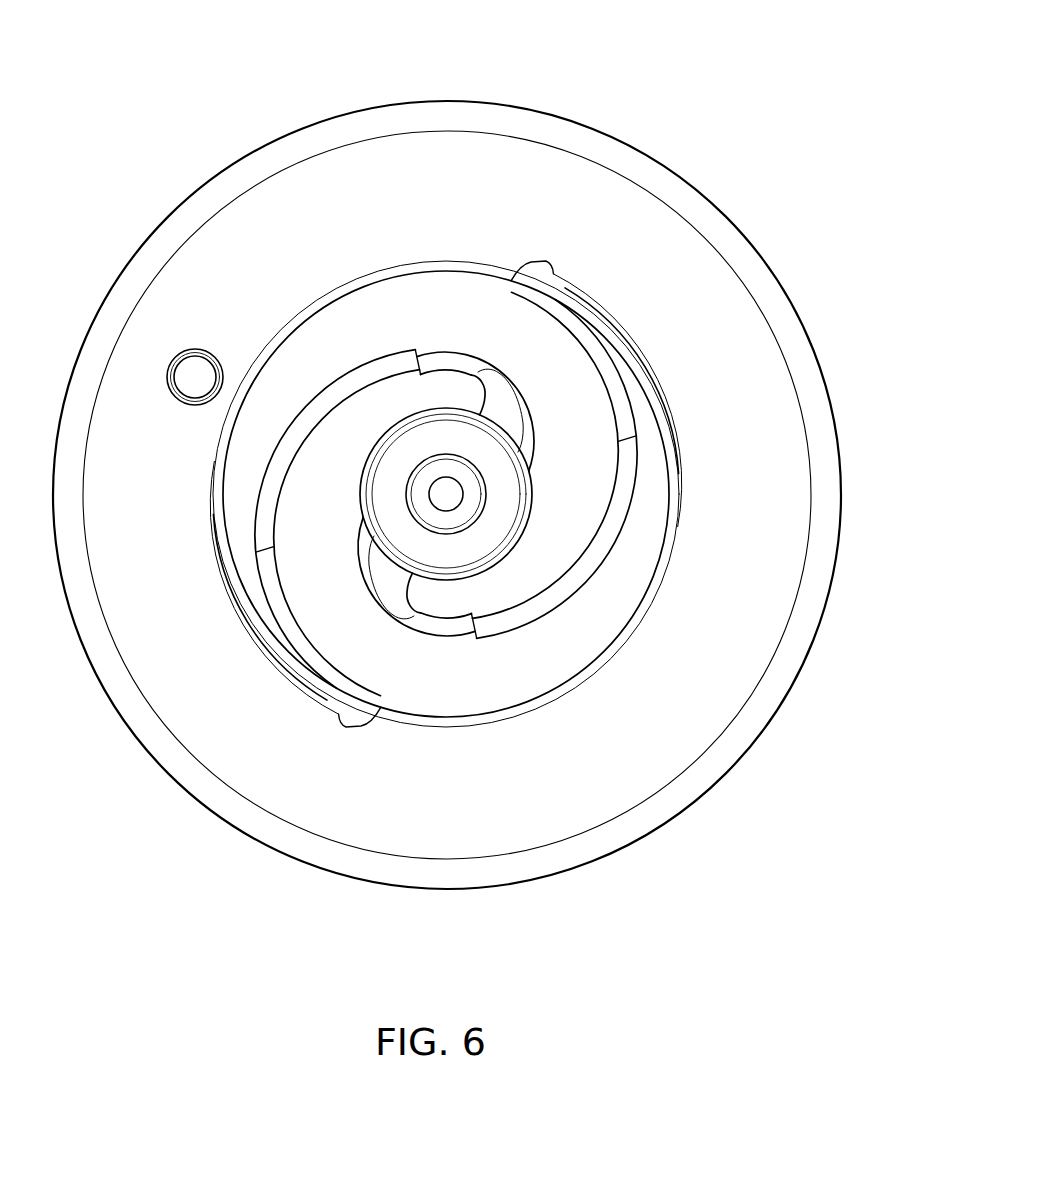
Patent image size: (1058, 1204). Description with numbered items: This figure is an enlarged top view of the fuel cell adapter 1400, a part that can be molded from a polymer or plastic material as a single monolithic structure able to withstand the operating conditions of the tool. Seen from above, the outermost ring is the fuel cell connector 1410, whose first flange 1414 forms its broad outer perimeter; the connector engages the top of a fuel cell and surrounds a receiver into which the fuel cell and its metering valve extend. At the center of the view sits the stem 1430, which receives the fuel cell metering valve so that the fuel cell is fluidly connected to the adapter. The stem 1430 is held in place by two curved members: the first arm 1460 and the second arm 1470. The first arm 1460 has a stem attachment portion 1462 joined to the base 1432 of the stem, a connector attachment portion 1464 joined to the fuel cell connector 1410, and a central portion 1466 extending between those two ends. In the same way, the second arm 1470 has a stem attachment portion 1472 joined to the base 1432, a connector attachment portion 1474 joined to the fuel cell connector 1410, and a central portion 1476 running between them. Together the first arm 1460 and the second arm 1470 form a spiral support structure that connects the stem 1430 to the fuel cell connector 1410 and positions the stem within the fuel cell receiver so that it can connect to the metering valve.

The fuel cell adapter 1400 is at (157, 65).
The fuel cell connector 1410 is at (140, 859).
The first flange 1414 is at (820, 497).
The stem 1430 is at (402, 452).
The base 1432 is at (360, 478).
The first arm 1460 is at (452, 352).
The stem attachment portion 1462 is at (638, 365).
The connector attachment portion 1464 is at (437, 715).
The central portion 1466 is at (290, 443).
The second arm 1470 is at (548, 611).
The stem attachment portion 1472 is at (365, 567).
The connector attachment portion 1474 is at (548, 306).
The central portion 1476 is at (607, 503).